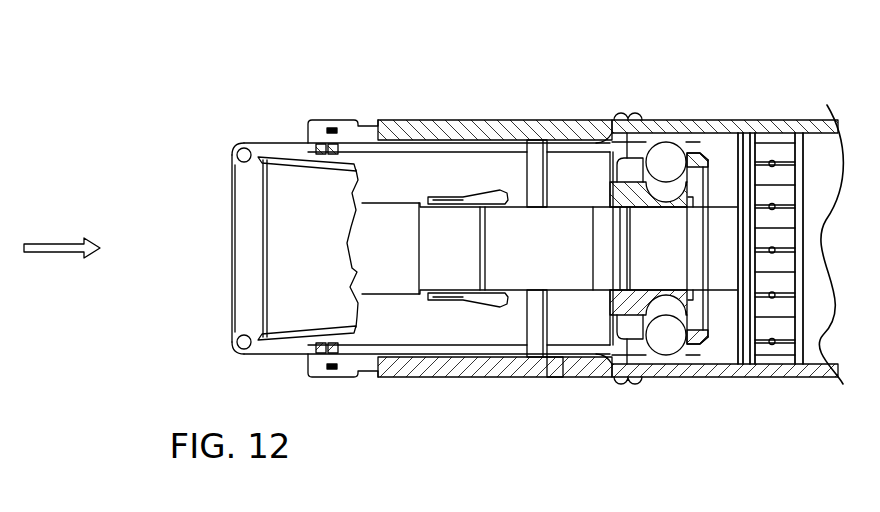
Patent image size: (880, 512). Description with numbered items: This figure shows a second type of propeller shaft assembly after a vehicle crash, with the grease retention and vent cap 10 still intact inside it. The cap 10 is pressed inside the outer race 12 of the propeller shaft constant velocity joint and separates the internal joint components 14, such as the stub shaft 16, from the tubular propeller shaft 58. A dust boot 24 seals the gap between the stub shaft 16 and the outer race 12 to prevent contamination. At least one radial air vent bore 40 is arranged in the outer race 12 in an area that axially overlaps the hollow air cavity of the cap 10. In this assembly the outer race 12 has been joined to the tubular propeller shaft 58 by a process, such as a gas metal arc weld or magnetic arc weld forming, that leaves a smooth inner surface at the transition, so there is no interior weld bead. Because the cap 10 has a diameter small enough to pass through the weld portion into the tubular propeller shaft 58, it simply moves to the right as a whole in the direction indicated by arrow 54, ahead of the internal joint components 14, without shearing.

The cap 10 is at (731, 130).
The outer race 12 is at (500, 130).
The internal joint components 14 is at (667, 153).
The stub shaft 16 is at (383, 256).
The dust boot 24 is at (362, 125).
The radial air vent bore 40 is at (556, 378).
The direction of insertion 54 is at (56, 247).
The tubular propeller shaft 58 is at (698, 125).